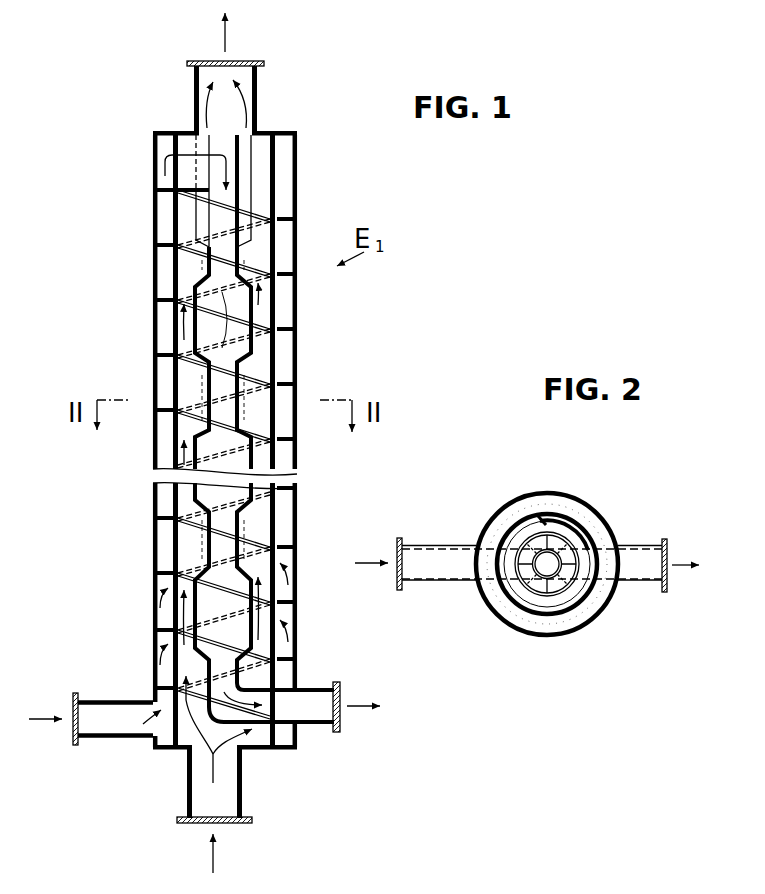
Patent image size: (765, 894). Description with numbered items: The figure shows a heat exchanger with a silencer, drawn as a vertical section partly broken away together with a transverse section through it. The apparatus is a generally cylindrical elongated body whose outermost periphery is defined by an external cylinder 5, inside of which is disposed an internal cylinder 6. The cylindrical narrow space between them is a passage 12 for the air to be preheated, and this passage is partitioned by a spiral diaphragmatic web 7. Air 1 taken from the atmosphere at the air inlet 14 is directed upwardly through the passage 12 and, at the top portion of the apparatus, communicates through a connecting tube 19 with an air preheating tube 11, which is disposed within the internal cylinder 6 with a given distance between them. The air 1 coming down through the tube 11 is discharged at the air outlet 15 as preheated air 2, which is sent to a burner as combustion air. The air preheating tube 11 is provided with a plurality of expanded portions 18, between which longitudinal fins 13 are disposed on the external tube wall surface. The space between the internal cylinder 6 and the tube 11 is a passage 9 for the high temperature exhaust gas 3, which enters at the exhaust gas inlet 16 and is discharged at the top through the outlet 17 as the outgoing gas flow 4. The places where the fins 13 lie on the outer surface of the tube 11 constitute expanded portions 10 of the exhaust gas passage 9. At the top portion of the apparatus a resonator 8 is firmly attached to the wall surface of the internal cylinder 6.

In FIG. 1, the air 1 is at (42, 738).
In FIG. 2, the air 1 is at (371, 547).
In FIG. 1, the preheated air 2 is at (372, 726).
In FIG. 2, the preheated air 2 is at (686, 550).
In FIG. 1, the high temperature exhaust gas 3 is at (225, 864).
In FIG. 1, the second fluid outlet flow 4 is at (211, 26).
In FIG. 1, the external cylinder 5 is at (152, 602).
In FIG. 2, the external cylinder 5 is at (550, 492).
In FIG. 1, the internal cylinder 6 is at (175, 550).
In FIG. 2, the internal cylinder 6 is at (573, 517).
In FIG. 1, the spiral diaphragmatic web 7 is at (180, 518).
In FIG. 1, the resonator 8 is at (262, 177).
In FIG. 1, the passage 9 is at (297, 473).
In FIG. 1, the expanded portions 10 is at (247, 367).
In FIG. 2, the expanded portions 10 is at (537, 540).
In FIG. 1, the air preheating tube 11 is at (253, 241).
In FIG. 2, the air preheating tube 11 is at (557, 537).
In FIG. 1, the passage 12 is at (167, 330).
In FIG. 2, the passage 12 is at (532, 623).
In FIG. 1, the longitudinal fins 13 is at (258, 420).
In FIG. 2, the longitudinal fins 13 is at (557, 593).
In FIG. 1, the air inlet 14 is at (103, 697).
In FIG. 2, the air inlet 14 is at (442, 557).
In FIG. 1, the air outlet 15 is at (313, 724).
In FIG. 2, the air outlet 15 is at (643, 557).
In FIG. 1, the exhaust gas inlet 16 is at (242, 797).
In FIG. 1, the outlet 17 is at (258, 97).
In FIG. 1, the expanded portions 18 is at (228, 308).
In FIG. 1, the connecting tube 19 is at (188, 178).